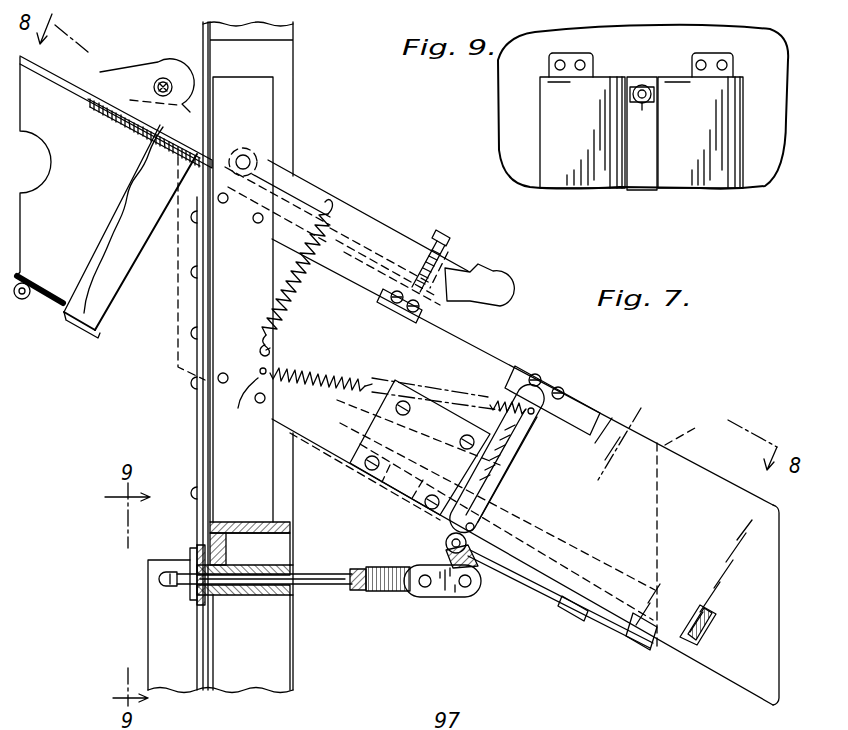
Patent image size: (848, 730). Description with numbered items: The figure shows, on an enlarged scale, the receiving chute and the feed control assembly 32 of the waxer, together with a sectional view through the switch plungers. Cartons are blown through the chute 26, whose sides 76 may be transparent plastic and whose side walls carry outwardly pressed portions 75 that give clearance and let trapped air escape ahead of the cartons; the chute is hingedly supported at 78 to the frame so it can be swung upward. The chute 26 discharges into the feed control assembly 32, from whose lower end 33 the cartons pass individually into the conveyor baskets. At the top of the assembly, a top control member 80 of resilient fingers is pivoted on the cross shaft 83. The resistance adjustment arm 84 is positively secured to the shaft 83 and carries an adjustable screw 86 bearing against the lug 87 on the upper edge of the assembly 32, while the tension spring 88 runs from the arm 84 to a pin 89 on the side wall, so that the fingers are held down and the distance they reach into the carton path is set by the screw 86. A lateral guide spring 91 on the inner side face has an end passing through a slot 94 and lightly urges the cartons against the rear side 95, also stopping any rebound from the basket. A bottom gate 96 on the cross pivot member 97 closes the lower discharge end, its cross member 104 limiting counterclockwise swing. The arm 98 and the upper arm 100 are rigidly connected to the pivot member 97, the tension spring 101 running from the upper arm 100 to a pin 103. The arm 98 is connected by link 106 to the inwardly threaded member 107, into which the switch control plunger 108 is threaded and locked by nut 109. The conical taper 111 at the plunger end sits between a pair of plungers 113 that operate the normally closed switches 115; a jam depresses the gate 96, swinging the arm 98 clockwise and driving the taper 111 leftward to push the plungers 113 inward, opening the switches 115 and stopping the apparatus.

In FIG. 7, the chute 26 is at (48, 297).
In FIG. 7, the feed control assembly 32 is at (521, 353).
In FIG. 7, the lower end of the feed control assembly 33 is at (780, 650).
In FIG. 7, the outwardly pressed portions 75 is at (44, 151).
In FIG. 7, the sides of the chute 76 is at (40, 93).
In FIG. 7, the hinge support 78 is at (160, 84).
In FIG. 7, the top control member 80 is at (623, 442).
In FIG. 7, the cross shaft 83 is at (250, 165).
In FIG. 7, the resistance adjustment arm 84 is at (356, 222).
In FIG. 7, the adjustable screw 86 is at (443, 236).
In FIG. 7, the lug 87 is at (415, 290).
In FIG. 7, the tension spring 88 is at (297, 263).
In FIG. 7, the pin 89 is at (272, 357).
In FIG. 7, the lateral guide spring 91 is at (640, 634).
In FIG. 7, the slot 94 is at (700, 645).
In FIG. 7, the rear side of the assembly 95 is at (667, 458).
In FIG. 7, the bottom gate 96 is at (607, 626).
In FIG. 7, the cross pivot member 97 is at (444, 543).
In FIG. 7, the arm 98 is at (474, 571).
In FIG. 7, the upper arm 100 is at (500, 468).
In FIG. 7, the tension spring 101 is at (360, 373).
In FIG. 7, the pin 103 is at (241, 400).
In FIG. 7, the cross member 104 is at (570, 603).
In FIG. 7, the link 106 is at (445, 597).
In FIG. 7, the inwardly threaded member 107 is at (390, 592).
In FIG. 7, the switch control plunger 108 is at (313, 592).
In FIG. 7, the nut 109 is at (358, 568).
In FIG. 7, the conical taper 111 is at (186, 570).
In FIG. 9, the conical taper 111 is at (642, 133).
In FIG. 7, the plungers 113 is at (165, 580).
In FIG. 9, the plungers 113 is at (652, 88).
In FIG. 7, the switches 115 is at (155, 637).
In FIG. 9, the switches 115 is at (598, 141).